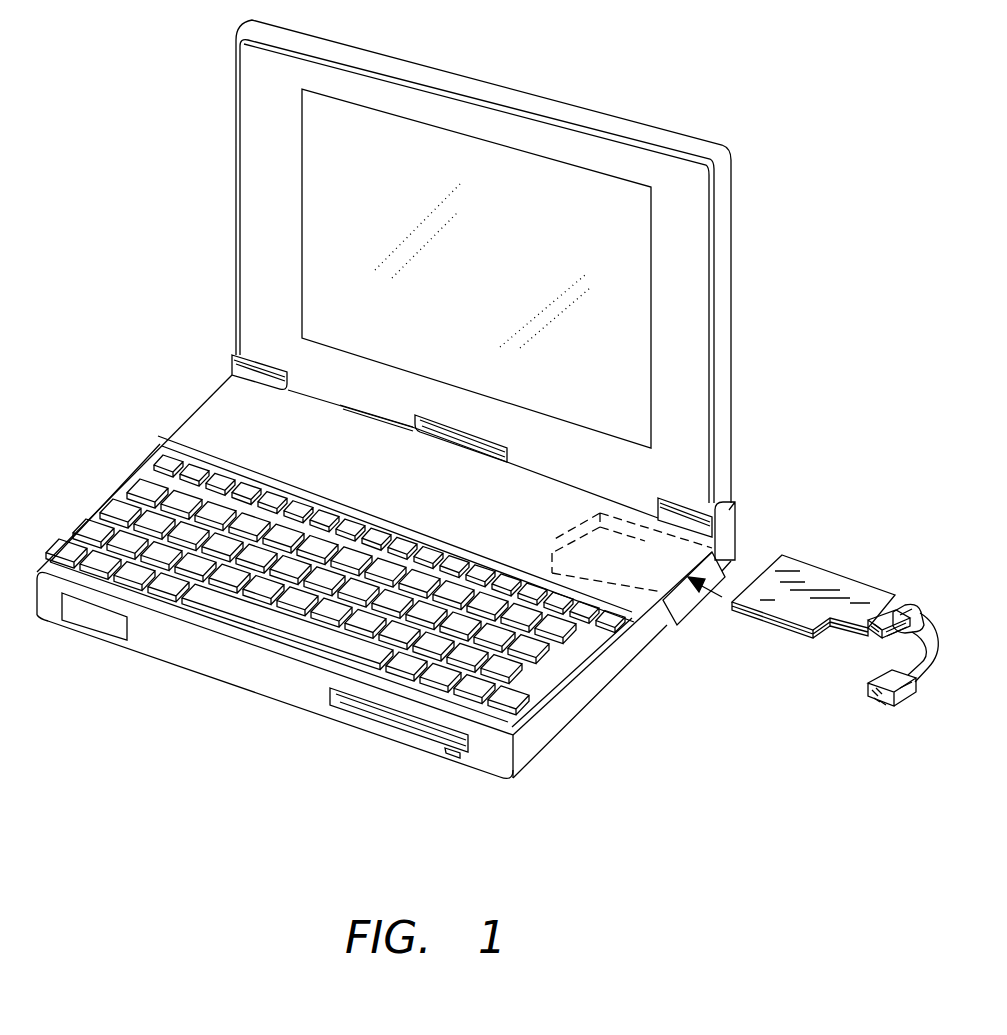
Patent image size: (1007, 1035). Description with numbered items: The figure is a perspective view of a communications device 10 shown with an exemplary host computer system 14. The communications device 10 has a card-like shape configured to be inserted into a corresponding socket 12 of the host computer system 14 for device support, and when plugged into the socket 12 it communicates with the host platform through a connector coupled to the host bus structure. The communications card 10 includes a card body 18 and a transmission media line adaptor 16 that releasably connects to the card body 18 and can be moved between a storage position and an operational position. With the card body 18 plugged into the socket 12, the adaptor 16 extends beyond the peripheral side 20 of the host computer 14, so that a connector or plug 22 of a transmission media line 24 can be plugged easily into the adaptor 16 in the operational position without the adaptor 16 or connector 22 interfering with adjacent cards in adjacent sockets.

The communications device 10 is at (487, 430).
The socket 12 is at (667, 492).
The host computer system 14 is at (420, 430).
The transmission media line adaptor 16 is at (903, 613).
The card body 18 is at (807, 609).
The peripheral side 20 is at (587, 687).
The connector 22 is at (922, 624).
The transmission media line 24 is at (912, 652).